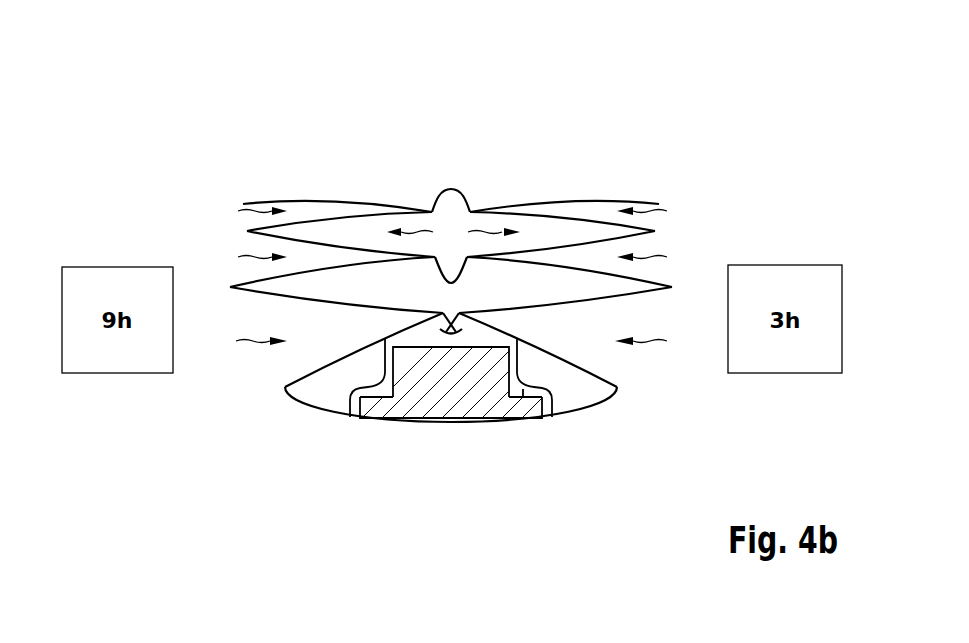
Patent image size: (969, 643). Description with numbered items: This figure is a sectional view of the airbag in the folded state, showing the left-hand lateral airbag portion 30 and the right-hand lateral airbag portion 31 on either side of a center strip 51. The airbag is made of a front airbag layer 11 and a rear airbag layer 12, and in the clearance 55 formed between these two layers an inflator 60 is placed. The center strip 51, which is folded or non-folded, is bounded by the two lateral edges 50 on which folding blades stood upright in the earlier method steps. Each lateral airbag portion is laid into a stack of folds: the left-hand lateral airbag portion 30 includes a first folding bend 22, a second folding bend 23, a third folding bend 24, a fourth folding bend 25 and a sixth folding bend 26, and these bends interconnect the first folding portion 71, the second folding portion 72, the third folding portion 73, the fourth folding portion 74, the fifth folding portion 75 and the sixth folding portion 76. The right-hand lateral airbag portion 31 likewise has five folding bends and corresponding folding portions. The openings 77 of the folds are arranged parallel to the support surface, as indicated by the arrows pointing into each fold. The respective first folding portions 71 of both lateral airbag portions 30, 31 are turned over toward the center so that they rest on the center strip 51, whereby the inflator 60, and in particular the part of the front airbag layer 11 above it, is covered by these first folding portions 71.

The front airbag layer 11 is at (372, 380).
The rear airbag layer 12 is at (378, 422).
The first folding bend 22 is at (443, 311).
The second folding bend 23 is at (451, 238).
The third folding bend 24 is at (450, 281).
The fourth folding bend 25 is at (450, 208).
The sixth folding bend 26 is at (451, 188).
The left-hand lateral airbag portion 30 is at (340, 123).
The right-hand lateral airbag portion 31 is at (562, 123).
The lateral edge 50 is at (293, 402).
The center strip 51 is at (433, 318).
The clearance 55 is at (523, 399).
The inflator 60 is at (447, 402).
The first folding portion 71 is at (317, 362).
The second folding portion 72 is at (350, 297).
The third folding portion 73 is at (360, 263).
The fourth folding portion 74 is at (339, 242).
The fifth folding portion 75 is at (305, 218).
The sixth folding portion 76 is at (262, 199).
The openings 77 is at (449, 276).